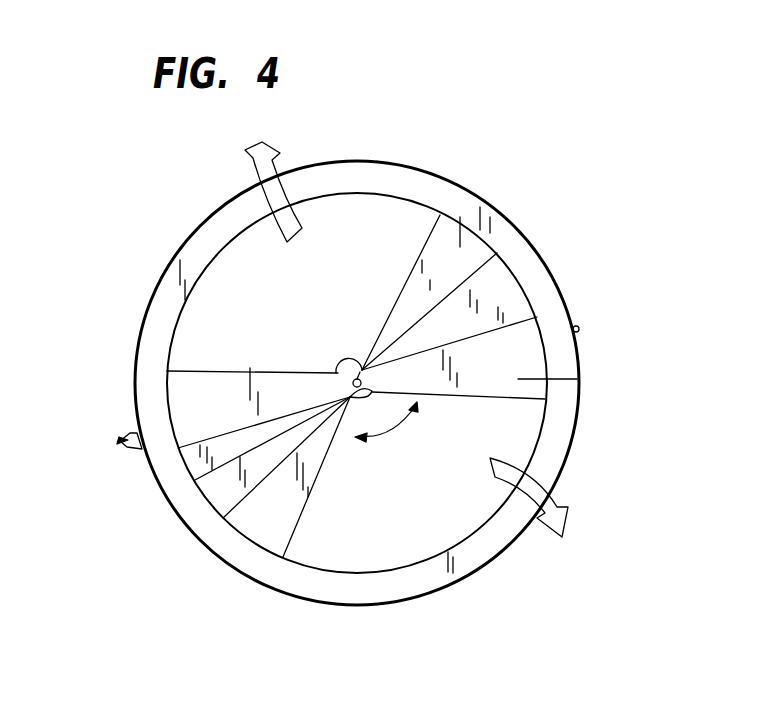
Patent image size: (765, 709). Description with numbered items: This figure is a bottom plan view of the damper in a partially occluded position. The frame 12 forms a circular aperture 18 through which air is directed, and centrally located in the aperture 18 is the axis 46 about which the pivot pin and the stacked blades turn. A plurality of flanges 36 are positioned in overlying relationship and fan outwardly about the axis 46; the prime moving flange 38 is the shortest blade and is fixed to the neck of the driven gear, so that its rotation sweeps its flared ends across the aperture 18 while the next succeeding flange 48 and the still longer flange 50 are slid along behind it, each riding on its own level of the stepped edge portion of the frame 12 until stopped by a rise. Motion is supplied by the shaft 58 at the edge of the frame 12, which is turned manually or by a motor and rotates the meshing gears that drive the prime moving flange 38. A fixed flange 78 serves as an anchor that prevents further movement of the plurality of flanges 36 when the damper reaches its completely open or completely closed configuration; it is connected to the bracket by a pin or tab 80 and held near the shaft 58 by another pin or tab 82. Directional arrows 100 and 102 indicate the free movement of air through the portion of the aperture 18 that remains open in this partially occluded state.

The frame 12 is at (553, 317).
The aperture 18 is at (232, 270).
The plurality of flanges 36 is at (313, 522).
The prime moving flange 38 is at (458, 247).
The axis 46 is at (343, 368).
The flange 48 is at (498, 283).
The flange 50 is at (522, 312).
The shaft 58 is at (136, 433).
The fixed flange 78 is at (577, 379).
The pin or tab 80 is at (579, 329).
The pin or tab 82 is at (127, 450).
The directional arrow 100 is at (262, 163).
The directional arrow 102 is at (557, 502).